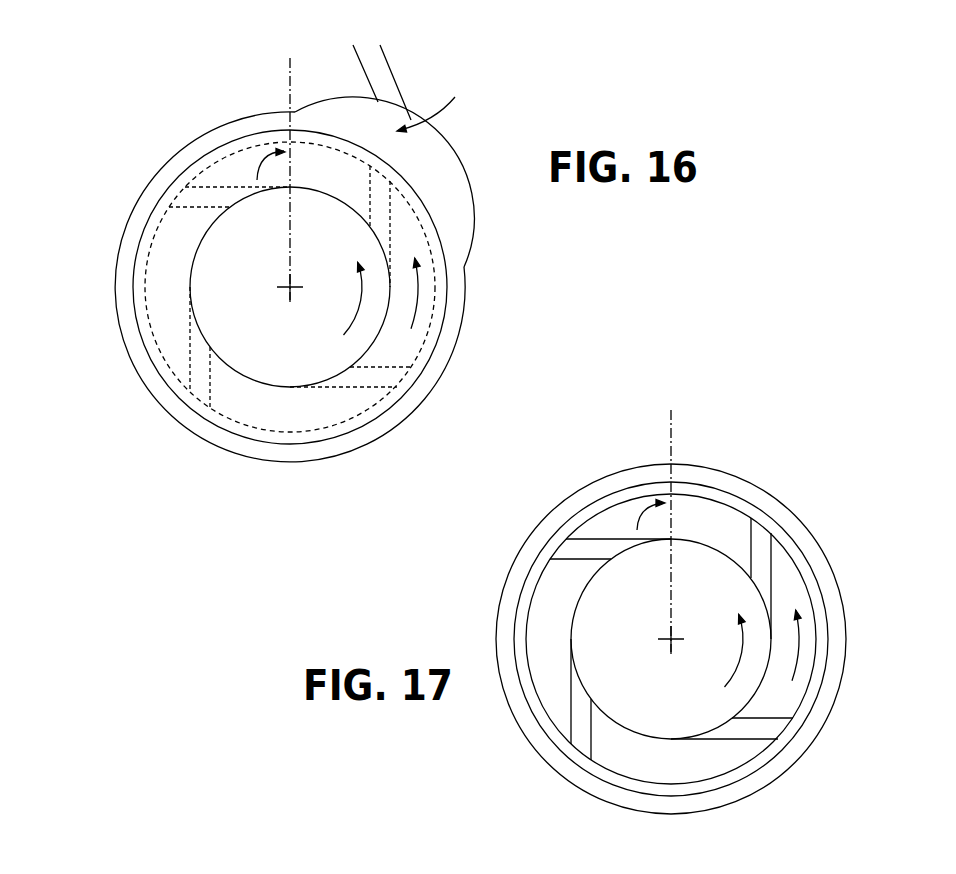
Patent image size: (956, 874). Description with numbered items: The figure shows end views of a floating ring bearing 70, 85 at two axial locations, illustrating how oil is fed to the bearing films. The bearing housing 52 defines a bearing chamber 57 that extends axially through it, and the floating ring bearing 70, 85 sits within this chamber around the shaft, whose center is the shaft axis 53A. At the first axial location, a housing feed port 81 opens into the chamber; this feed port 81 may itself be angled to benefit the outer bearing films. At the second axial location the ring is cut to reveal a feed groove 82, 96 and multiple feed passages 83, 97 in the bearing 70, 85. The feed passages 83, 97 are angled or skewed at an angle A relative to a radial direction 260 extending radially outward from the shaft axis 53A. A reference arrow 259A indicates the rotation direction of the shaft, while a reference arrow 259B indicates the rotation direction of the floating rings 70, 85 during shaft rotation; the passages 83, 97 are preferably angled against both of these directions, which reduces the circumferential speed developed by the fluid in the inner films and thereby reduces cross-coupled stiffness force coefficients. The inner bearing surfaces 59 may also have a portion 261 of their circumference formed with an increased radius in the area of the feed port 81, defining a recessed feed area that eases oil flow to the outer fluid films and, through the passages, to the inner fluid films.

In FIG. 16, the bearing housing 52 is at (202, 135).
In FIG. 17, the bearing housing 52 is at (583, 487).
In FIG. 16, the bearing chamber 57 is at (166, 160).
In FIG. 17, the bearing chamber 57 is at (541, 510).
In FIG. 16, the inner bearing surface 59 is at (465, 178).
In FIG. 16, the housing feed port 81 is at (383, 72).
In FIG. 16, the feed groove 82 is at (345, 287).
In FIG. 17, the feed groove 82 is at (726, 639).
In FIG. 16, the feed groove 96 is at (446, 243).
In FIG. 17, the feed groove 96 is at (826, 596).
In FIG. 16, the floating ring bearing 70 is at (290, 311).
In FIG. 17, the floating ring bearing 70 is at (671, 607).
In FIG. 16, the floating ring bearing 85 is at (380, 415).
In FIG. 17, the floating ring bearing 85 is at (704, 505).
In FIG. 16, the feed passage 83 is at (298, 273).
In FIG. 17, the feed passage 83 is at (638, 633).
In FIG. 16, the feed passage 97 is at (182, 192).
In FIG. 17, the feed passage 97 is at (758, 535).
In FIG. 16, the shaft axis 53A is at (284, 288).
In FIG. 17, the shaft axis 53A is at (666, 640).
In FIG. 16, the radial direction 260 is at (292, 88).
In FIG. 17, the radial direction 260 is at (673, 440).
In FIG. 16, the reference arrow 259A is at (357, 314).
In FIG. 17, the reference arrow 259A is at (738, 666).
In FIG. 16, the reference arrow 259B is at (418, 298).
In FIG. 17, the reference arrow 259B is at (798, 650).
In FIG. 16, the portion 261 is at (435, 103).
In FIG. 16, the angle A is at (258, 178).
In FIG. 17, the angle A is at (636, 528).